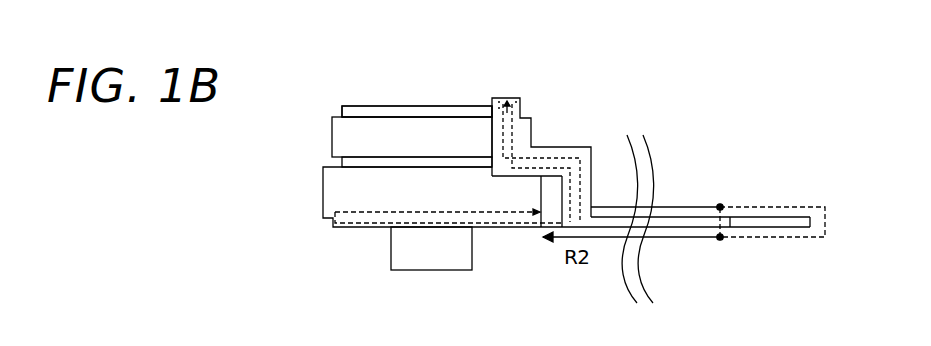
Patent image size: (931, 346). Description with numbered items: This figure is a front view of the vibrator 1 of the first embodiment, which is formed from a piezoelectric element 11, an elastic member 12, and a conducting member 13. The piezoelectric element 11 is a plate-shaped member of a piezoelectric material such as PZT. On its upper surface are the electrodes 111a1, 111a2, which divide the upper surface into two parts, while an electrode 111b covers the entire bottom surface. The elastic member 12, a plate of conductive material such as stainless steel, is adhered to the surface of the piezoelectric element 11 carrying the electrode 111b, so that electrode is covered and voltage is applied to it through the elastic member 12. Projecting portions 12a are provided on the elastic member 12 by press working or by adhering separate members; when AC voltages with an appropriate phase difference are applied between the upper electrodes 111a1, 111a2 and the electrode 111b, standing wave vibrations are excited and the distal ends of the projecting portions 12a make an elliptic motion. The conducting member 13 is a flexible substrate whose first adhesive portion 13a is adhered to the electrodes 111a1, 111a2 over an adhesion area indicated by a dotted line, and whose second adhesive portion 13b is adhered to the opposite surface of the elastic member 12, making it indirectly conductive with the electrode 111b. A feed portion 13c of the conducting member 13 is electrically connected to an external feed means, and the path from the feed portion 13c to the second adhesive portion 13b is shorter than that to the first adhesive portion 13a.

The vibrator 1 is at (338, 96).
The piezoelectric element 11 is at (331, 130).
The electrode 111a1 is at (408, 107).
The electrode 111a2 is at (417, 111).
The electrode 111b is at (340, 161).
The elastic member 12 is at (323, 196).
The projecting portions 12a is at (432, 270).
The conducting member 13 is at (693, 206).
The first adhesive portion 13a is at (517, 97).
The second adhesive portion 13b is at (357, 230).
The feed portion 13c is at (806, 206).